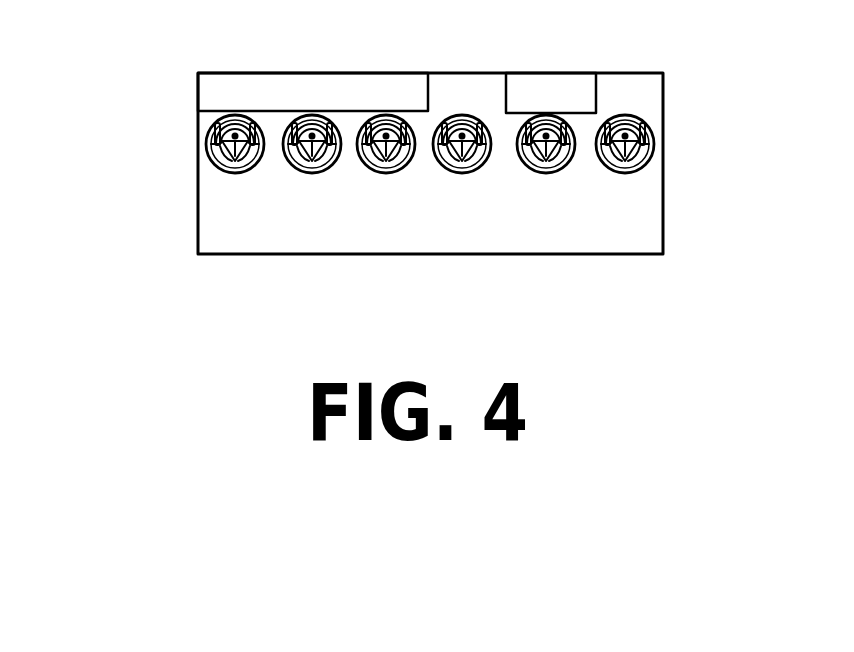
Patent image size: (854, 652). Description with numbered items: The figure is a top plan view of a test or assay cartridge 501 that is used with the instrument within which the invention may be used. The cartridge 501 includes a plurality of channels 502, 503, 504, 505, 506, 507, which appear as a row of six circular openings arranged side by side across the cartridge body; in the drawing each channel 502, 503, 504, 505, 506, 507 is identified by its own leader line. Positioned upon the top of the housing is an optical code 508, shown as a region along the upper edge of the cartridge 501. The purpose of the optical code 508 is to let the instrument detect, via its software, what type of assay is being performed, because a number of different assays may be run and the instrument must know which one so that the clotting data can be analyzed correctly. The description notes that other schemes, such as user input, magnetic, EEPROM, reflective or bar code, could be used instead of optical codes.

The test or assay cartridge 501 is at (678, 122).
The channel 502 is at (235, 173).
The channel 503 is at (311, 173).
The channel 504 is at (396, 171).
The channel 505 is at (472, 173).
The channel 506 is at (548, 173).
The channel 507 is at (627, 173).
The optical code 508 is at (198, 92).